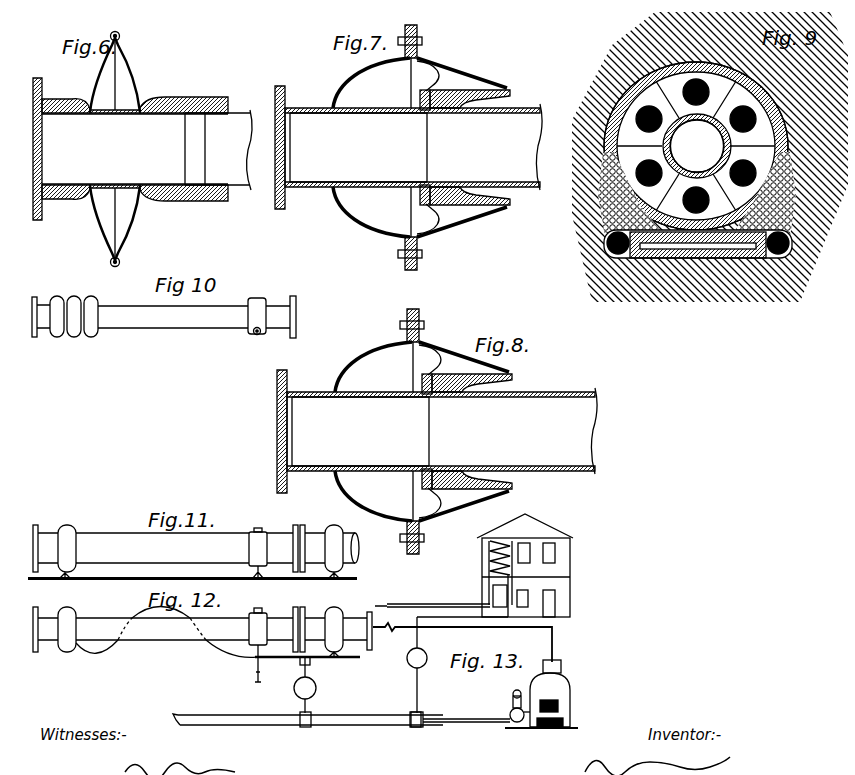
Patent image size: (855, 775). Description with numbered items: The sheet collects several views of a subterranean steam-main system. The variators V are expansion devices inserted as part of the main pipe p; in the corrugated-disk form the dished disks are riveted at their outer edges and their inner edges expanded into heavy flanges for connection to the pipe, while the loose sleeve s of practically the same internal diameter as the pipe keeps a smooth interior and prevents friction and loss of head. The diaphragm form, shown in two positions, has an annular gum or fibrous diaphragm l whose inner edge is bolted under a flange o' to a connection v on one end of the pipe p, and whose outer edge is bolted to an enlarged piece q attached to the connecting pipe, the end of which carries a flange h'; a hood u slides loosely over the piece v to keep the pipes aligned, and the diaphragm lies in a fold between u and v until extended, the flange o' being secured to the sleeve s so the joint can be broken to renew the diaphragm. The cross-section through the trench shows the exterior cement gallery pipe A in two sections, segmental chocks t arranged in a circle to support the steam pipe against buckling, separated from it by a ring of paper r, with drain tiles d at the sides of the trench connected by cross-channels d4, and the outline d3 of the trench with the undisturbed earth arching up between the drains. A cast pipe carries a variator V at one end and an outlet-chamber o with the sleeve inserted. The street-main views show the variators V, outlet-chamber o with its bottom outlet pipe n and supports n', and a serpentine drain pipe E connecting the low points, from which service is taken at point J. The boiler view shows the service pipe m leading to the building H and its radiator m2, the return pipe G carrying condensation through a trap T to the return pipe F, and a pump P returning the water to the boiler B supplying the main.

In FIG. 6, the variator V is at (110, 40).
In FIG. 7, the variator V is at (416, 144).
In FIG. 8, the variator V is at (418, 428).
In FIG. 10, the variator V is at (74, 308).
In FIG. 11, the variator V is at (204, 539).
In FIG. 12, the variator V is at (204, 620).
In FIG. 6, the enlarged piece q is at (115, 149).
In FIG. 7, the enlarged piece q is at (371, 151).
In FIG. 8, the enlarged piece q is at (373, 435).
In FIG. 6, the sleeve s is at (135, 149).
In FIG. 7, the sleeve s is at (358, 147).
In FIG. 8, the sleeve s is at (360, 431).
In FIG. 9, the sleeve s is at (697, 146).
In FIG. 6, the main pipe p is at (142, 149).
In FIG. 7, the main pipe p is at (413, 147).
In FIG. 8, the main pipe p is at (442, 431).
In FIG. 10, the main pipe p is at (164, 317).
In FIG. 11, the main pipe p is at (196, 548).
In FIG. 12, the main pipe p is at (202, 632).
In FIG. 13, the main pipe p is at (462, 640).
In FIG. 7, the flange h' is at (290, 147).
In FIG. 8, the flange h' is at (292, 431).
In FIG. 7, the diaphragm l is at (428, 147).
In FIG. 8, the diaphragm l is at (430, 431).
In FIG. 7, the hood u is at (462, 146).
In FIG. 8, the hood u is at (464, 430).
In FIG. 7, the connection v is at (470, 140).
In FIG. 8, the connection v is at (484, 426).
In FIG. 7, the flange o' is at (417, 146).
In FIG. 8, the flange o' is at (419, 430).
In FIG. 9, the trench cross-section outline d3 is at (598, 200).
In FIG. 9, the box or pipe A is at (768, 120).
In FIG. 9, the segmental chocks t is at (696, 146).
In FIG. 9, the ring of paper r is at (701, 146).
In FIG. 9, the drain-tiles d is at (695, 256).
In FIG. 9, the cross-channels d4 is at (715, 250).
In FIG. 10, the outlet-chamber o is at (257, 316).
In FIG. 11, the outlet-chamber o is at (258, 547).
In FIG. 12, the outlet-chamber o is at (258, 619).
In FIG. 11, the drain pipe E is at (192, 570).
In FIG. 12, the drain pipe E is at (280, 656).
In FIG. 11, the bottom outlet-pipe n is at (262, 571).
In FIG. 12, the bottom outlet-pipe n is at (265, 647).
In FIG. 11, the supports n' is at (208, 569).
In FIG. 12, the supports n' is at (341, 647).
In FIG. 12, the service point J is at (250, 672).
In FIG. 12, the trap T is at (305, 685).
In FIG. 13, the trap T is at (417, 665).
In FIG. 12, the return-pipe F is at (308, 713).
In FIG. 13, the return-pipe F is at (466, 712).
In FIG. 13, the building H is at (535, 565).
In FIG. 13, the radiator m2 is at (516, 569).
In FIG. 13, the service-pipe m is at (441, 596).
In FIG. 13, the return-pipe G is at (412, 700).
In FIG. 13, the pump P is at (520, 698).
In FIG. 13, the boiler B is at (541, 694).